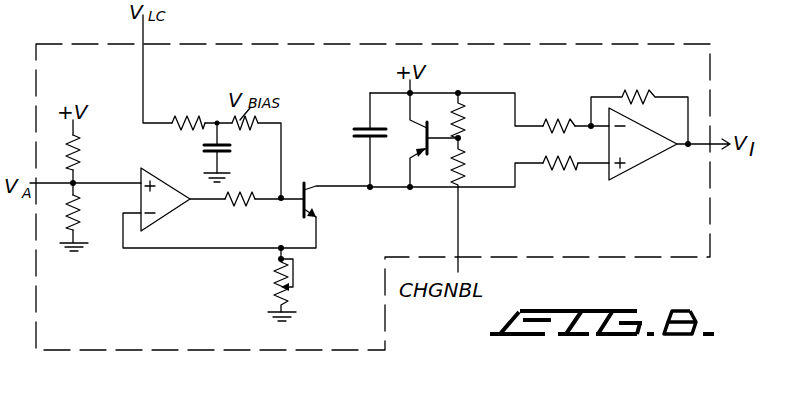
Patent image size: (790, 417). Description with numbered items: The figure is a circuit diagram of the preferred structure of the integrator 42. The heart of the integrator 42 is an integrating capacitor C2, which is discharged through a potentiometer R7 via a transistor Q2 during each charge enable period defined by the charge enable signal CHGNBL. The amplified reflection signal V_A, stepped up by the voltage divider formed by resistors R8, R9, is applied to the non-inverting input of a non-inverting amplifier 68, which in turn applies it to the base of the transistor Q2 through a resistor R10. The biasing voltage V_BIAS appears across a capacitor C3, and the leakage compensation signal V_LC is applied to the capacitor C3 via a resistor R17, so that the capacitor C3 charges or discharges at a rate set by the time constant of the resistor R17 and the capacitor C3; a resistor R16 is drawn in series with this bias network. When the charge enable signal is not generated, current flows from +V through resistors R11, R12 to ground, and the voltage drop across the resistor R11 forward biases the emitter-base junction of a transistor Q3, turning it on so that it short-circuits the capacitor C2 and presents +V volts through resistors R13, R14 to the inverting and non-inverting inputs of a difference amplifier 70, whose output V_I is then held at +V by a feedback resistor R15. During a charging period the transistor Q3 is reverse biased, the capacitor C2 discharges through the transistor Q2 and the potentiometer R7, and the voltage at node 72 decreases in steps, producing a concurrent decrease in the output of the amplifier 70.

The integrator 42 is at (527, 44).
The non-inverting amplifier 68 is at (167, 214).
The difference amplifier 70 is at (627, 172).
The node 72 is at (372, 192).
The potentiometer R7 is at (278, 268).
The voltage divider resistor R8 is at (88, 152).
The voltage divider resistor R9 is at (88, 212).
The resistor R10 is at (240, 205).
The resistor R11 is at (462, 118).
The resistor R12 is at (462, 163).
The resistor R13 is at (566, 110).
The resistor R14 is at (562, 166).
The feedback resistor R15 is at (653, 84).
The resistor R16 is at (246, 128).
The resistor R17 is at (197, 101).
The integrating capacitor C2 is at (353, 140).
The capacitor C3 is at (196, 152).
The transistor Q2 is at (337, 205).
The transistor Q3 is at (410, 146).